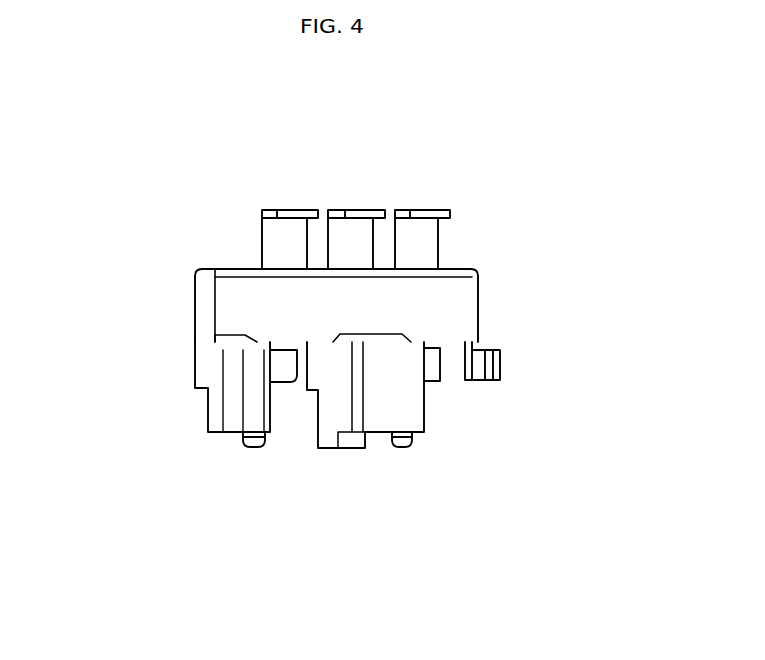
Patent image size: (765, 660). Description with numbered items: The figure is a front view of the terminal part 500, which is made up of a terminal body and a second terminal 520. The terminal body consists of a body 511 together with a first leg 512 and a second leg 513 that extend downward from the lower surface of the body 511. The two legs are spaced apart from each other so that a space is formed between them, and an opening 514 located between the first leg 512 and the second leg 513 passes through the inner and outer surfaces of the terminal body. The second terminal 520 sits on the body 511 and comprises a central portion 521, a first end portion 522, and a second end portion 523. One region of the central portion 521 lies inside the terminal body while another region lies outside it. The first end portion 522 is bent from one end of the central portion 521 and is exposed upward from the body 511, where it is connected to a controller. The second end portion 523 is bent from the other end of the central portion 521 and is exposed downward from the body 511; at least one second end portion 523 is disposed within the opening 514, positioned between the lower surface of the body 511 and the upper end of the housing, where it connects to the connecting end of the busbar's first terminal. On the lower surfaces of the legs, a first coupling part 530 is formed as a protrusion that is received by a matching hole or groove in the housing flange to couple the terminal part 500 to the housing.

The terminal part 500 is at (193, 130).
The body 511 is at (282, 292).
The first leg 512 is at (233, 417).
The second leg 513 is at (370, 390).
The opening 514 is at (303, 415).
The second terminal 520 is at (366, 196).
The central portion 521 is at (418, 232).
The first end portion 522 is at (418, 209).
The second end portion 523 is at (432, 365).
The first coupling part 530 is at (247, 438).